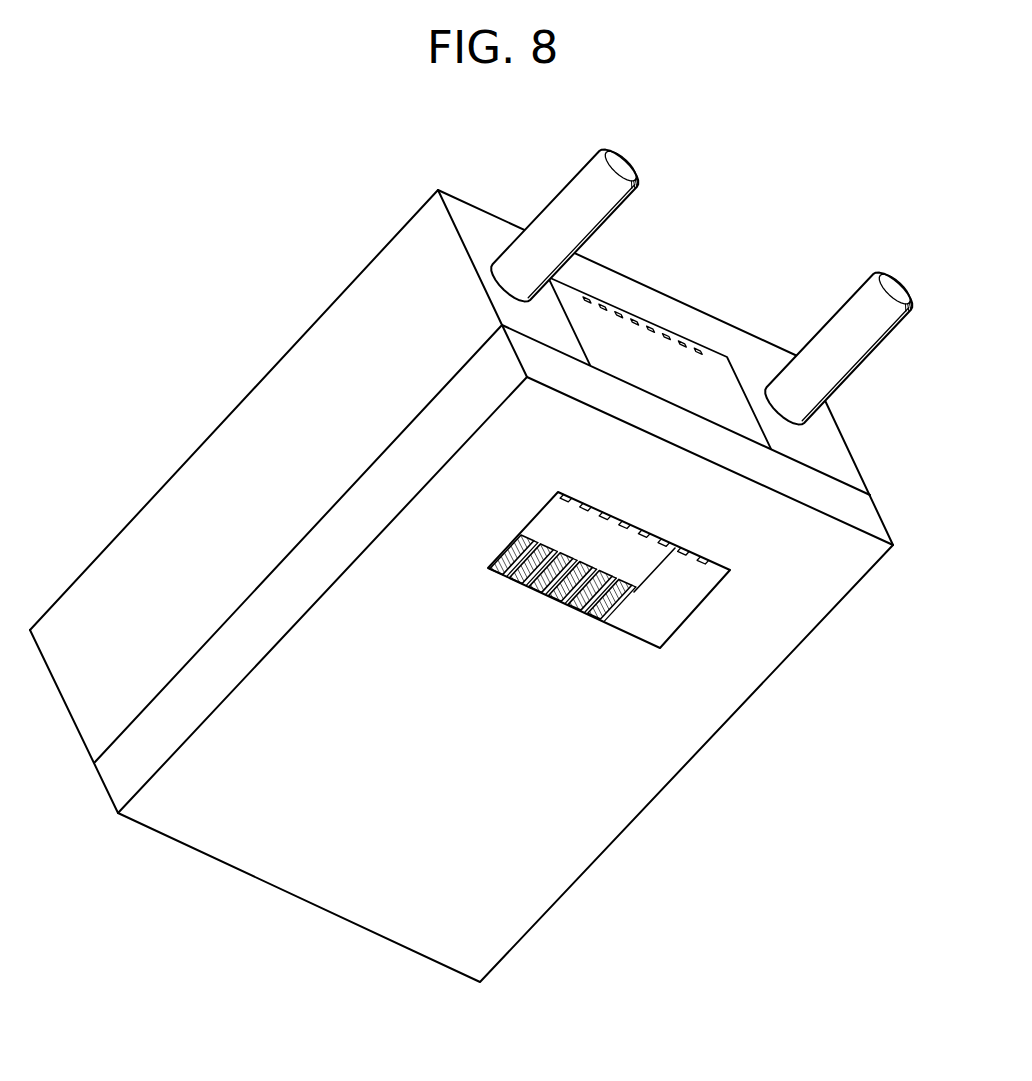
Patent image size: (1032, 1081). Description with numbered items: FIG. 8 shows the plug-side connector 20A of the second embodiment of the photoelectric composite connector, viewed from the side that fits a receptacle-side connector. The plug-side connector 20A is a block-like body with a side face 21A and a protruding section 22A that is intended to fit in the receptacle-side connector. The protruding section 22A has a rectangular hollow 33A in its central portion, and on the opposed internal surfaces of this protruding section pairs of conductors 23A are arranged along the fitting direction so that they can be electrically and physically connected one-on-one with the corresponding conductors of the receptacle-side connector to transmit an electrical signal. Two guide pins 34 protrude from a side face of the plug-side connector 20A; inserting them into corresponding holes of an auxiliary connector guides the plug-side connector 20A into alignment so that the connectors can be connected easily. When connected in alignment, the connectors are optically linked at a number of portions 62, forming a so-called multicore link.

The plug-side connector 20A is at (236, 337).
The side surface 21A is at (853, 517).
The protruding section 22A is at (493, 443).
The conductors 23A is at (648, 631).
The rectangular hollow 33A is at (633, 567).
The guide pins 34 is at (580, 186).
The portions 62 is at (637, 327).